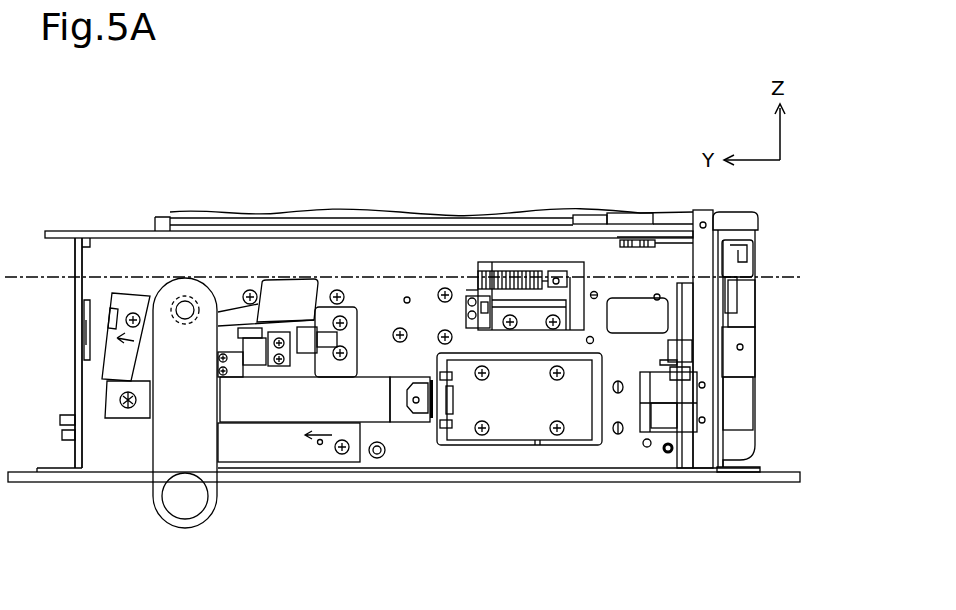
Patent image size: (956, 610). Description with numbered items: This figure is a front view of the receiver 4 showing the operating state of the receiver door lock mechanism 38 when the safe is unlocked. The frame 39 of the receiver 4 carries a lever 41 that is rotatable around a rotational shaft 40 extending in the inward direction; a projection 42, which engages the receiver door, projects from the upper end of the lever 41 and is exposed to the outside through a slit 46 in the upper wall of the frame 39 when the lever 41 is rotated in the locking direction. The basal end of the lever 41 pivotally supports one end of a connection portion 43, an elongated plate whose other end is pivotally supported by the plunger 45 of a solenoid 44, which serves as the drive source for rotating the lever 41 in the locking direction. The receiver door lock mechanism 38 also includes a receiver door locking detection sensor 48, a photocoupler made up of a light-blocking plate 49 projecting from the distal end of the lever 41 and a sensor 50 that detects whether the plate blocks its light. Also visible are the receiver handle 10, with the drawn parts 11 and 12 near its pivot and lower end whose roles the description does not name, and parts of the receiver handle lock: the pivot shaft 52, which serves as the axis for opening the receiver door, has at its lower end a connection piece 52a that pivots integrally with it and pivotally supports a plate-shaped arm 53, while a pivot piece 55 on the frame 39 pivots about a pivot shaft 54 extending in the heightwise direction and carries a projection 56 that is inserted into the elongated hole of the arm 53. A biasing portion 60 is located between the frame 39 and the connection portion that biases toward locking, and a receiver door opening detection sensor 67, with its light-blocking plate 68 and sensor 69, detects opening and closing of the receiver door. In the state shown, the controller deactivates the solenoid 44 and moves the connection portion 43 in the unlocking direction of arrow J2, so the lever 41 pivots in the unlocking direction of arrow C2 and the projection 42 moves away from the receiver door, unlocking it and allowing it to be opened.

The receiver 4 is at (25, 486).
The receiver handle 10 is at (153, 496).
The pivot shaft 11 is at (177, 297).
The roller 12 is at (193, 502).
The receiver door lock mechanism 38 is at (312, 256).
The frame 39 is at (93, 463).
The rotational shaft 40 is at (121, 312).
The lever 41 is at (112, 363).
The unlocking direction arrow C2 is at (128, 343).
The projection 42 is at (278, 292).
The connection portion 43 is at (256, 413).
The solenoid 44 is at (508, 427).
The plunger 45 is at (437, 413).
The slit 46 is at (318, 278).
The receiver door locking detection sensor 48 is at (292, 364).
The light-blocking plate 49 is at (277, 368).
The sensor 50 is at (253, 358).
The pivot shaft 52 is at (702, 232).
The connection piece 52a is at (685, 423).
The arm 53 is at (646, 362).
The pivot shaft 54 is at (665, 240).
The pivot piece 55 is at (657, 337).
The projection 56 is at (683, 350).
The biasing portion 60 is at (517, 280).
The receiver door opening detection sensor 67 is at (466, 290).
The light-blocking plate 68 is at (492, 327).
The sensor 69 is at (465, 318).
The unlocking direction arrow J2 is at (328, 443).